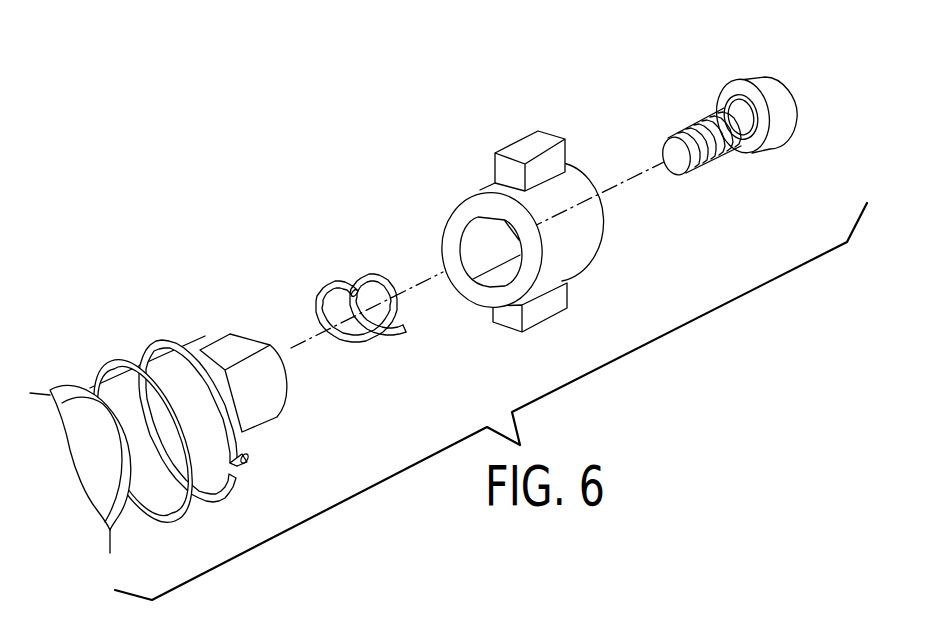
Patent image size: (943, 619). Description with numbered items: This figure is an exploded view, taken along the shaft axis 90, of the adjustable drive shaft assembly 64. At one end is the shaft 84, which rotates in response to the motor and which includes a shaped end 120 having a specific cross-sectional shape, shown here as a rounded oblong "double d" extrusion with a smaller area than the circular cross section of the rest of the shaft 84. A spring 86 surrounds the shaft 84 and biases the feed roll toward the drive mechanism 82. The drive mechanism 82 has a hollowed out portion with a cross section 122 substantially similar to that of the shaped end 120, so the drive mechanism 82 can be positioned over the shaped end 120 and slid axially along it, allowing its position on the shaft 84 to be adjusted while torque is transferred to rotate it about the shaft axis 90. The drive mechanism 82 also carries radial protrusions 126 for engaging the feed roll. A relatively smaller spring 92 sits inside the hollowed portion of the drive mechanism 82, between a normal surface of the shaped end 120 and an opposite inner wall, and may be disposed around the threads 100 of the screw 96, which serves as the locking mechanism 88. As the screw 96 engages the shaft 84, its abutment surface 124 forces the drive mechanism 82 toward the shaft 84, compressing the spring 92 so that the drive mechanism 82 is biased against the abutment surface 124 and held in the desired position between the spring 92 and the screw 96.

The adjustable drive shaft assembly 64 is at (448, 316).
The drive mechanism 82 is at (527, 228).
The shaft 84 is at (148, 455).
The spring 86 is at (110, 365).
The locking mechanism 88 is at (746, 138).
The screw 96 is at (746, 138).
The shaft axis 90 is at (640, 173).
The spring 92 is at (387, 347).
The threads 100 is at (718, 157).
The shaped end 120 is at (250, 338).
The cross section 122 is at (490, 217).
The abutment surface 124 is at (757, 148).
The protrusions 126 is at (528, 142).